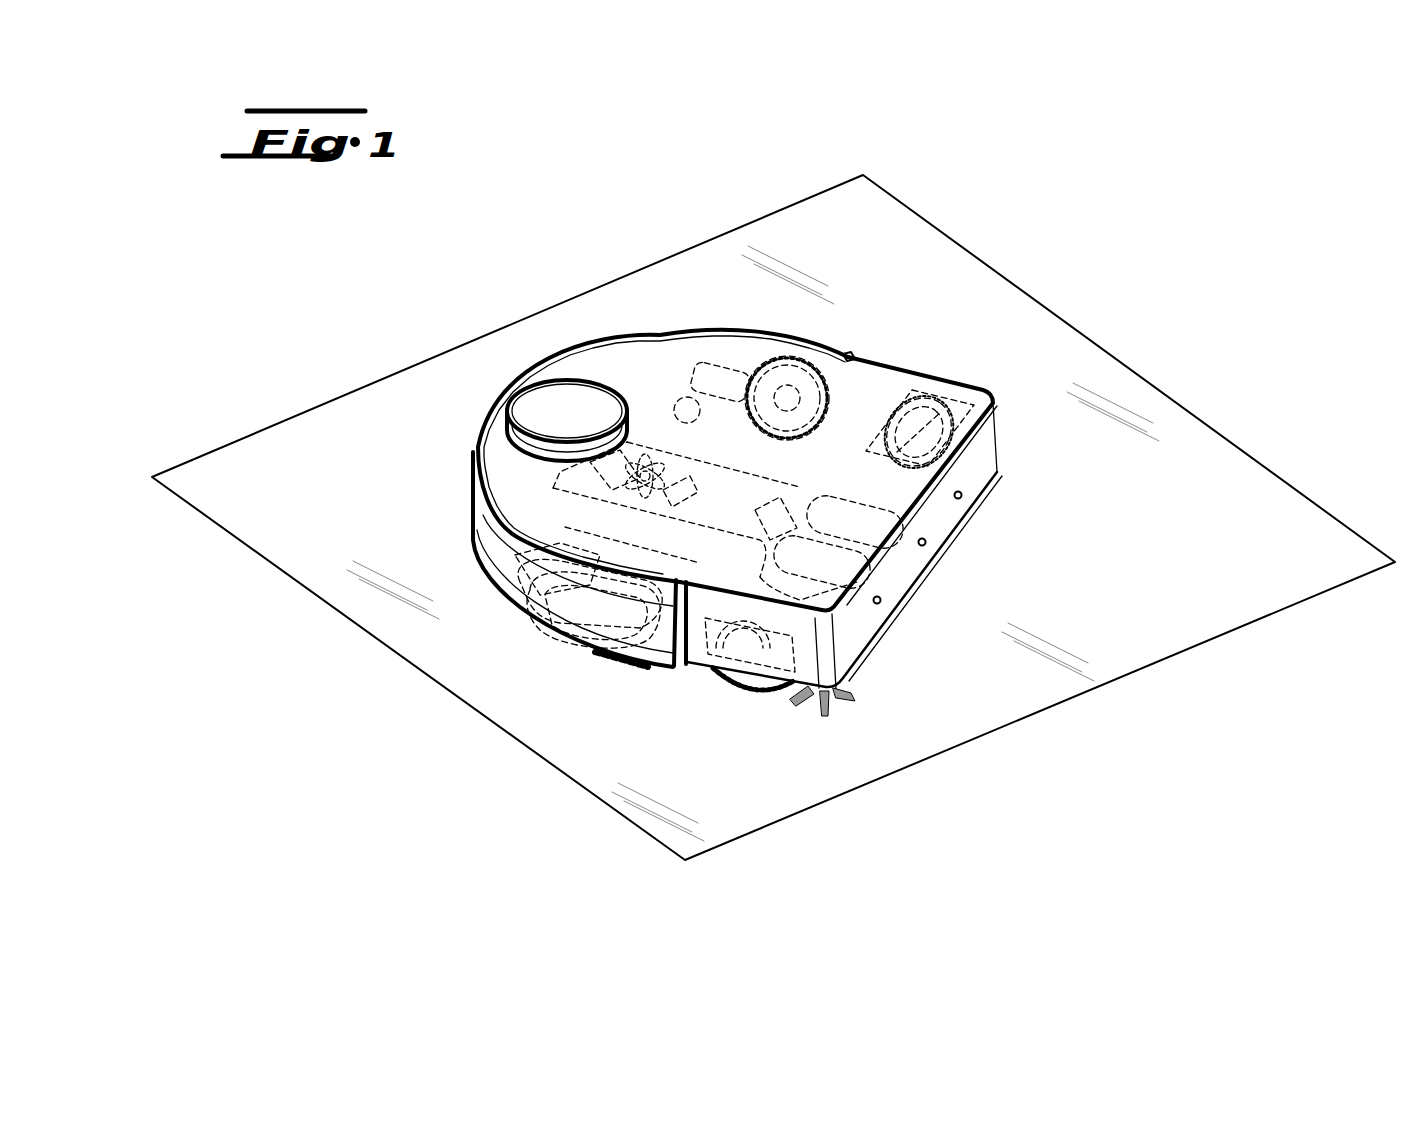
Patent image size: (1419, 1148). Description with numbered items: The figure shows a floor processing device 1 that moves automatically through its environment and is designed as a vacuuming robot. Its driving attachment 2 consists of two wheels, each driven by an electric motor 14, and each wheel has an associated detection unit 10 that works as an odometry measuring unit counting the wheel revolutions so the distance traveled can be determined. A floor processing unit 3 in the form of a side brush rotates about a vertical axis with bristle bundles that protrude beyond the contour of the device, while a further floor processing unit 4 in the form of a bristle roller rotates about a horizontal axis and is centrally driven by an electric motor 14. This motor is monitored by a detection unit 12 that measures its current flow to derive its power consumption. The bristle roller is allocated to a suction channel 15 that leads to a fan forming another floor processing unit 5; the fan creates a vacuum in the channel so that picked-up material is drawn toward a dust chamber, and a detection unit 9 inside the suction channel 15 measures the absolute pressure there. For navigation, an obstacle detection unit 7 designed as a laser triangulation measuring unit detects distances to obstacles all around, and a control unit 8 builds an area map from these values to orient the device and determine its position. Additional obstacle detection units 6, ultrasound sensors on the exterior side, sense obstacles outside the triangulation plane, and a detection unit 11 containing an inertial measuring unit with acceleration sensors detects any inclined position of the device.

The floor processing device 1 is at (463, 388).
The driving attachment 2 is at (636, 667).
The floor processing unit 3 is at (826, 716).
The floor processing unit 4 is at (750, 690).
The floor processing unit 5 is at (647, 458).
The obstacle detection units 6 is at (881, 600).
The obstacle detection unit 7 is at (562, 396).
The control unit 8 is at (702, 570).
The detection unit 9 is at (747, 490).
The detection unit 10 is at (732, 380).
The detection unit 11 is at (690, 483).
The detection unit 12 is at (775, 537).
The electric motor 14 is at (692, 385).
The suction channel 15 is at (930, 403).